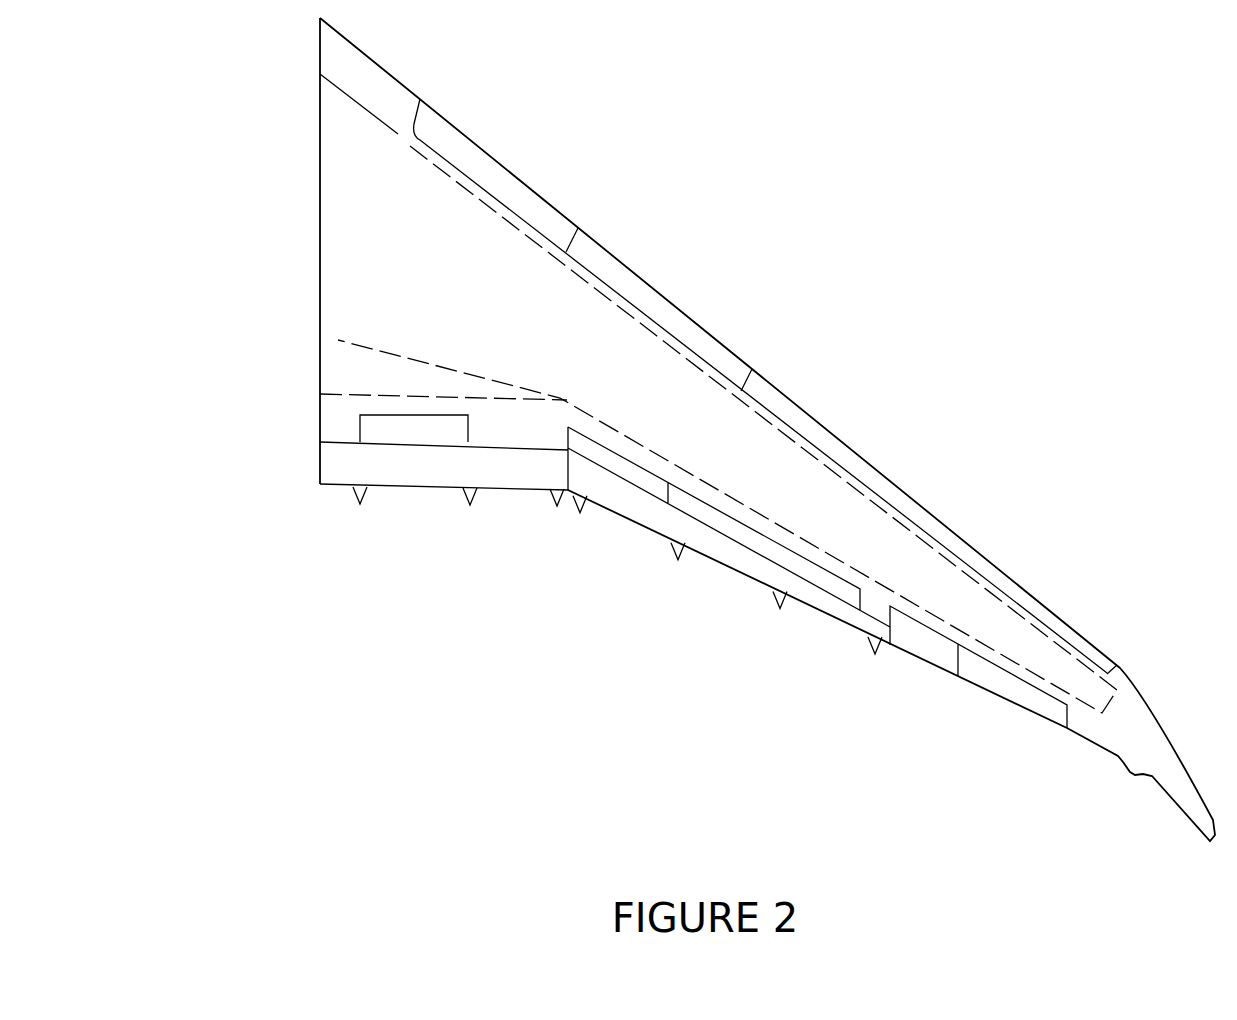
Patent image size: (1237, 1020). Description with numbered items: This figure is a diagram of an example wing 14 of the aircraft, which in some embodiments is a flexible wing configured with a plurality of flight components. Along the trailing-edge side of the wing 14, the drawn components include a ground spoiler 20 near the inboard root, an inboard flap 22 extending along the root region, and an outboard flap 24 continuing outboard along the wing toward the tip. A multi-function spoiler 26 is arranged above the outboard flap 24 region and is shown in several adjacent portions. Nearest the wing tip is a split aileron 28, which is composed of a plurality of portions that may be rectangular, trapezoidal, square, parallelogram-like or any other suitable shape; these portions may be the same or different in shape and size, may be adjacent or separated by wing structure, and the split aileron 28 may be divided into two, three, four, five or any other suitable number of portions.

The wing 14 is at (250, 85).
The ground spoiler 20 is at (392, 424).
The inboard flap 22 is at (420, 486).
The outboard flap 24 is at (716, 563).
The multi-function spoiler 26 is at (656, 462).
The split aileron 28 is at (962, 706).